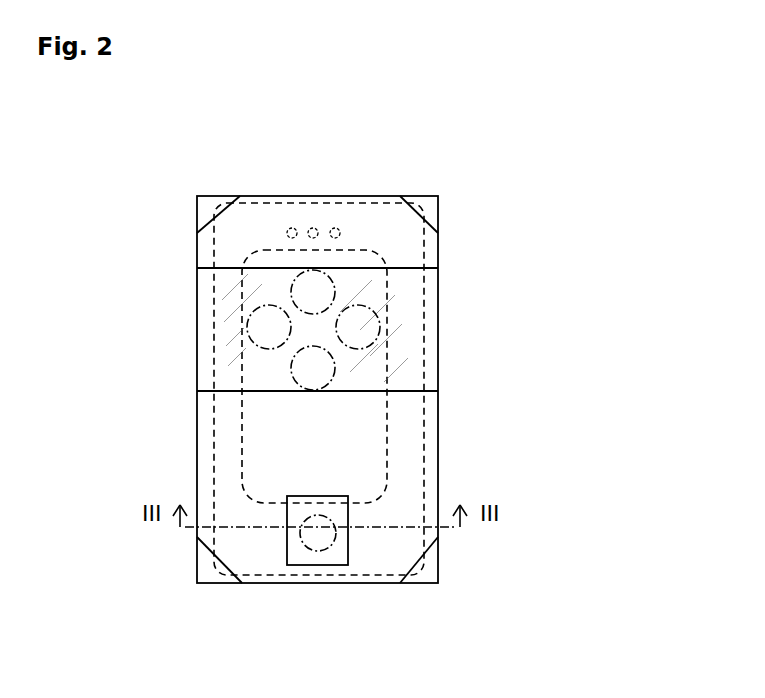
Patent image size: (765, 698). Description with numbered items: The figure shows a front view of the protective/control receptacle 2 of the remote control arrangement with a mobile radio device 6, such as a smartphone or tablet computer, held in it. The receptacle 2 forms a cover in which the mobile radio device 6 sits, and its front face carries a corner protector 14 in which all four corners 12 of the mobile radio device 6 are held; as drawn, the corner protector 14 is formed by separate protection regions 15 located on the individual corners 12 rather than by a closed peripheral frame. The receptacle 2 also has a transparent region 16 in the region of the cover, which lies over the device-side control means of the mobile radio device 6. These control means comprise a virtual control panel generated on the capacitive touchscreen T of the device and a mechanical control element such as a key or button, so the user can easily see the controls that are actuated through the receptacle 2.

The protective/control receptacle 2 is at (213, 183).
The mobile radio device 6 is at (413, 298).
The corners 12 is at (374, 208).
The corner protector 14 is at (448, 186).
The protection regions 15 is at (432, 196).
The transparent region 16 is at (437, 348).
The capacitive touchscreen T is at (358, 436).